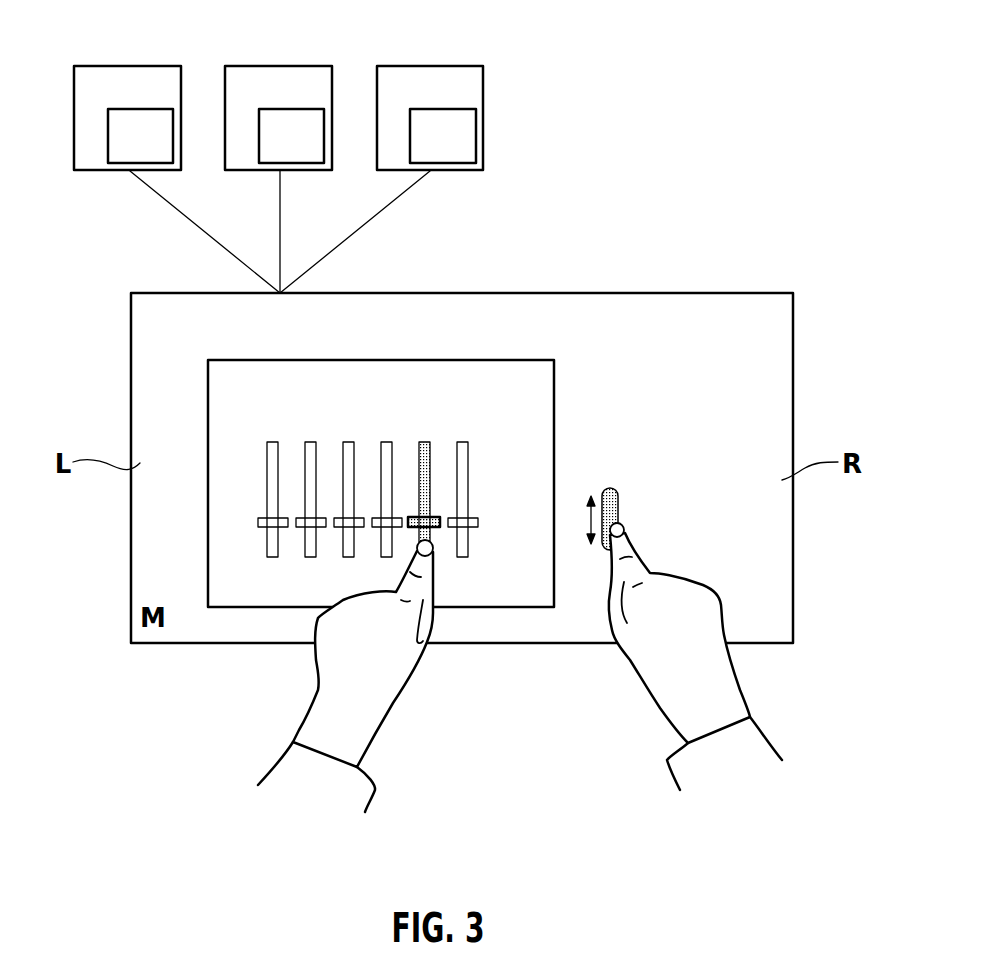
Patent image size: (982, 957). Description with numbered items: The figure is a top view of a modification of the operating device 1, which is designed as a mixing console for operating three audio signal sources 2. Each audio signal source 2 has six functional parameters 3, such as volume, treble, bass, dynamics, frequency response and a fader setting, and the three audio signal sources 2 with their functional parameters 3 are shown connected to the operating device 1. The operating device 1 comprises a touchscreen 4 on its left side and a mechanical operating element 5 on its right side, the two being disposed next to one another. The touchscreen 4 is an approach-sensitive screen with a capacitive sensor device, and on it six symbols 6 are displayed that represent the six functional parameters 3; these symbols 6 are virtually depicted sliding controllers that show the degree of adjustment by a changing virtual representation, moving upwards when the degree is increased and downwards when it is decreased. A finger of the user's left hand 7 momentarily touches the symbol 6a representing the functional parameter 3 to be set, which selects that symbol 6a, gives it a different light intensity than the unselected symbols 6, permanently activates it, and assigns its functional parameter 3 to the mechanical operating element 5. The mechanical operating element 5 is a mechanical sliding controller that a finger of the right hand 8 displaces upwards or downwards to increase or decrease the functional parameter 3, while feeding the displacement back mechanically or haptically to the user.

The operating device 1 is at (627, 284).
The audio signal source 2 is at (100, 78).
The functional parameter 3 is at (146, 118).
The touchscreen 4 is at (330, 372).
The mechanical operating element 5 is at (616, 511).
The symbol 6 is at (386, 440).
The selected symbol 6a is at (425, 440).
The left hand 7 is at (393, 712).
The right hand 8 is at (662, 715).